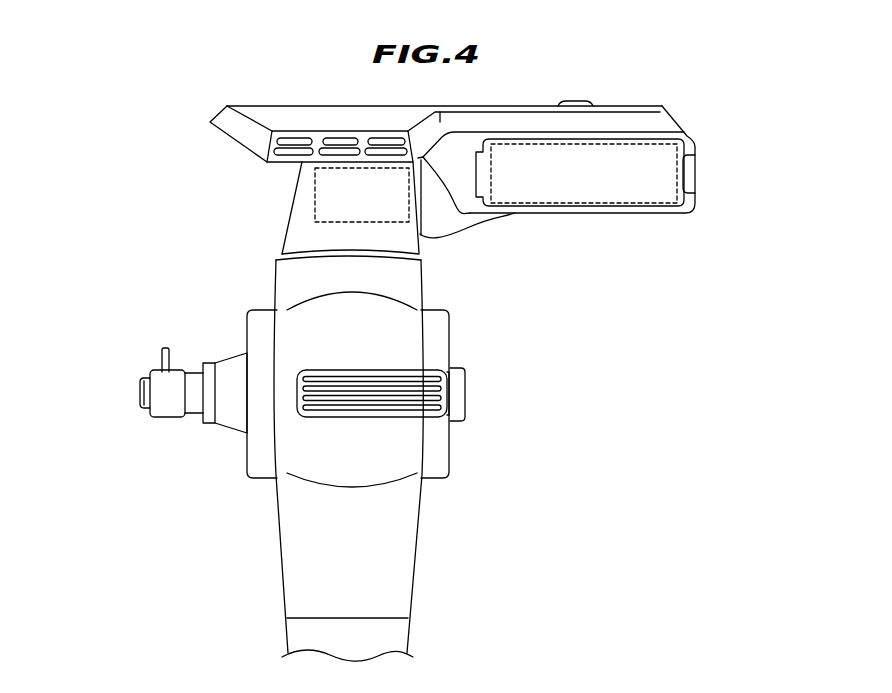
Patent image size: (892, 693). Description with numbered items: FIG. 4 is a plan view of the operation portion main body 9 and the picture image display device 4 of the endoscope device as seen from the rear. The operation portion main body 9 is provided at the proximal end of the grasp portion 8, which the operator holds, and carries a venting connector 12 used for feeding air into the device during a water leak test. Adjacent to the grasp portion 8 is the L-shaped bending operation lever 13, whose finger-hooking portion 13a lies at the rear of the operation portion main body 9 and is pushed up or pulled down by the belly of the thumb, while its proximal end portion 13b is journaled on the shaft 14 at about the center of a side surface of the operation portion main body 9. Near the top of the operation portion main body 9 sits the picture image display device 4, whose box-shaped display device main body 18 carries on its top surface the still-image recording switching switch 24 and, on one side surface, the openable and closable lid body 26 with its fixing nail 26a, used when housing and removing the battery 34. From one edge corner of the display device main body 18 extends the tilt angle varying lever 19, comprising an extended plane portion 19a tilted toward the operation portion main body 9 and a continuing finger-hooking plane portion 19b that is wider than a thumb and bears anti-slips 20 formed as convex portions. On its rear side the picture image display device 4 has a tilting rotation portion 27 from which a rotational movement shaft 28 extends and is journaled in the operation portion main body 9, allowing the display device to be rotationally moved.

The picture image display device 4 is at (645, 73).
The grasp portion 8 is at (410, 632).
The operation portion main body 9 is at (420, 520).
The venting connector 12 is at (167, 418).
The bending operation lever 13 is at (548, 420).
The finger-hooking portion 13a is at (399, 417).
The proximal end portion 13b is at (466, 396).
The shaft 14 is at (467, 380).
The display device main body 18 is at (675, 120).
The tilt angle varying lever 19 is at (138, 89).
The extended plane portion 19a is at (274, 121).
The finger-hooking plane portion 19b is at (272, 160).
The anti-slips 20 is at (410, 174).
The still-image recording switching switch 24 is at (582, 102).
The lid body 26 is at (645, 187).
The fixing nail 26a is at (696, 170).
The tilting rotation portion 27 is at (473, 230).
The rotational movement shaft 28 is at (313, 208).
The battery 34 is at (585, 204).